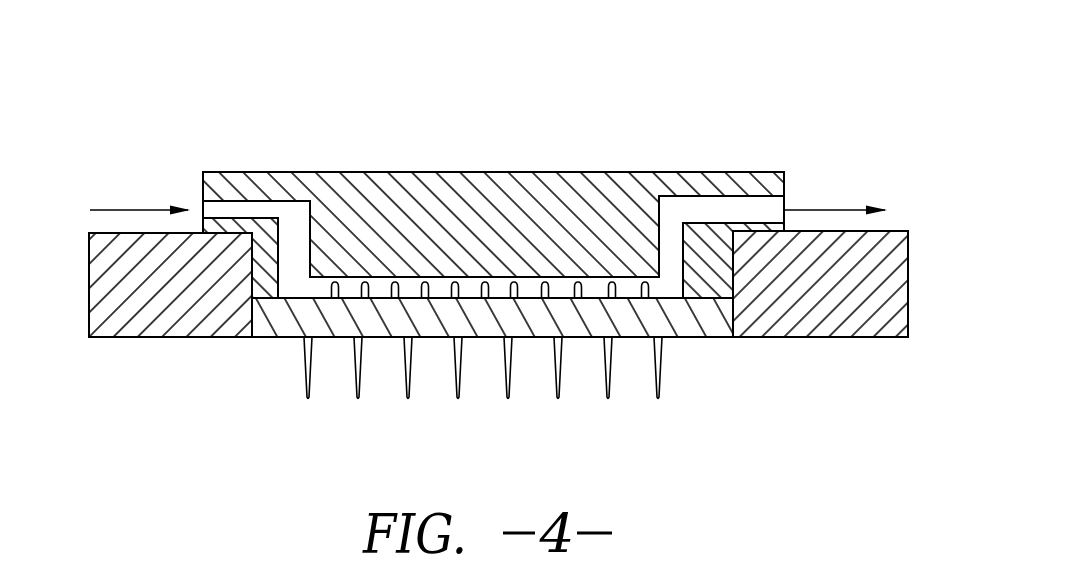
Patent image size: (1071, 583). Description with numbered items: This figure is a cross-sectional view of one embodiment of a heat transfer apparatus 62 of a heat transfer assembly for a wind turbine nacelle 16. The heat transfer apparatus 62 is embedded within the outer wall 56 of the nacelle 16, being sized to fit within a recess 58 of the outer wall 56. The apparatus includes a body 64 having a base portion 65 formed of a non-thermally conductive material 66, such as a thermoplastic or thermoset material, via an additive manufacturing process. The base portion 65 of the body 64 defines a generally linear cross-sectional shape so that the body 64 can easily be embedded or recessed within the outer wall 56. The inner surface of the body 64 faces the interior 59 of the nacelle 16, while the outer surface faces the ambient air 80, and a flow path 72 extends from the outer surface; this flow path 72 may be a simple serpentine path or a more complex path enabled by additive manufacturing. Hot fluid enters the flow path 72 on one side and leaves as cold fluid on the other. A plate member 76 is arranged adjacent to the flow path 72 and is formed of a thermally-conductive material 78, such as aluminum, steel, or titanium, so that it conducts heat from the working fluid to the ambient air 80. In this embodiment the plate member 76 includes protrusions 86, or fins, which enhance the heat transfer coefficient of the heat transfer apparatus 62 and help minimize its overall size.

The heat transfer apparatus 62 is at (501, 241).
The interior 59 is at (510, 130).
The ambient air 80 is at (507, 456).
The body 64 is at (670, 168).
The base portion 65 is at (565, 170).
The non-thermally conductive material 66 is at (378, 212).
The thermally-conductive material 78 is at (288, 317).
The nacelle 16 is at (167, 342).
The outer wall 56 is at (866, 325).
The recess 58 is at (733, 313).
The plate member 76 is at (687, 347).
The flow path 72 is at (352, 290).
The protrusions 86 is at (567, 377).